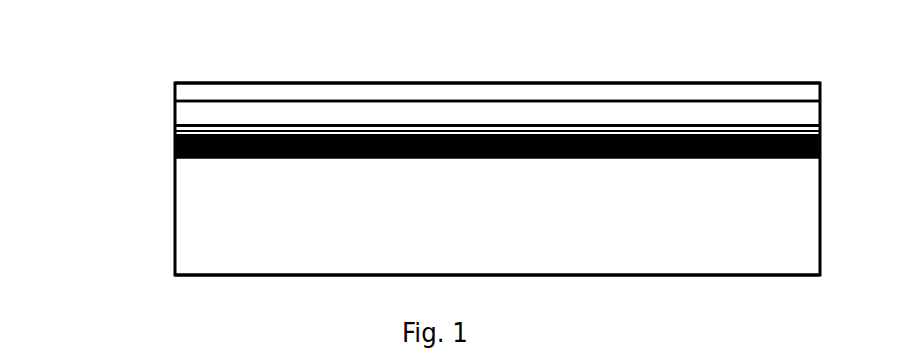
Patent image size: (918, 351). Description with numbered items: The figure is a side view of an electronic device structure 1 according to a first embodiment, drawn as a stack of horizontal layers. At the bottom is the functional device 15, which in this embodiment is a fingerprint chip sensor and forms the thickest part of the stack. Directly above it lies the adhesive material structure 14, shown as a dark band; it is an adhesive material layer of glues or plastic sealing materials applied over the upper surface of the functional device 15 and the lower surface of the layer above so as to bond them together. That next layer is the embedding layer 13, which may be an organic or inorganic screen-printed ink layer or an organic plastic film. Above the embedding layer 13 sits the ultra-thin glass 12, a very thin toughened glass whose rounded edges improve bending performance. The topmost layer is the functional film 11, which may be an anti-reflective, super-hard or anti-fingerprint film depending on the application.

The electronic device structure 1 is at (386, 70).
The functional film 11 is at (185, 90).
The ultra-thin glass 12 is at (190, 113).
The embedding layer 13 is at (183, 131).
The adhesive material structure 14 is at (178, 148).
The functional device 15 is at (210, 253).